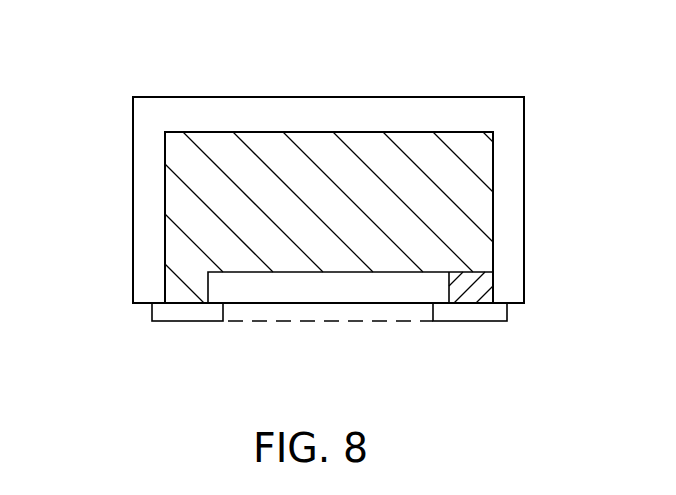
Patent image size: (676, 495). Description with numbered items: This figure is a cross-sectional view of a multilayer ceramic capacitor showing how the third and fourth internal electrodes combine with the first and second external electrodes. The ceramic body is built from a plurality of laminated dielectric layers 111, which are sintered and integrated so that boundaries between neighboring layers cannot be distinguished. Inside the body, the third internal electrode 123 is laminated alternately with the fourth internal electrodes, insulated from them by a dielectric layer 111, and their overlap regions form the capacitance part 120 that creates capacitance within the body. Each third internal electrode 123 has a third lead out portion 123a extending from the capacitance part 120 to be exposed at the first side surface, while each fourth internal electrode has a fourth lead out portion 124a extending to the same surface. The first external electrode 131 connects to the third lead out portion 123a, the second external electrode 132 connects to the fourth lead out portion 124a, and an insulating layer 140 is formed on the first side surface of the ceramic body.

The dielectric layer 111 is at (333, 110).
The capacitance part 120 is at (493, 207).
The third internal electrode 123 is at (180, 195).
The third lead out portion 123a is at (180, 288).
The fourth lead out portion 124a is at (478, 287).
The first external electrode 131 is at (185, 312).
The second external electrode 132 is at (467, 312).
The insulating layer 140 is at (303, 312).